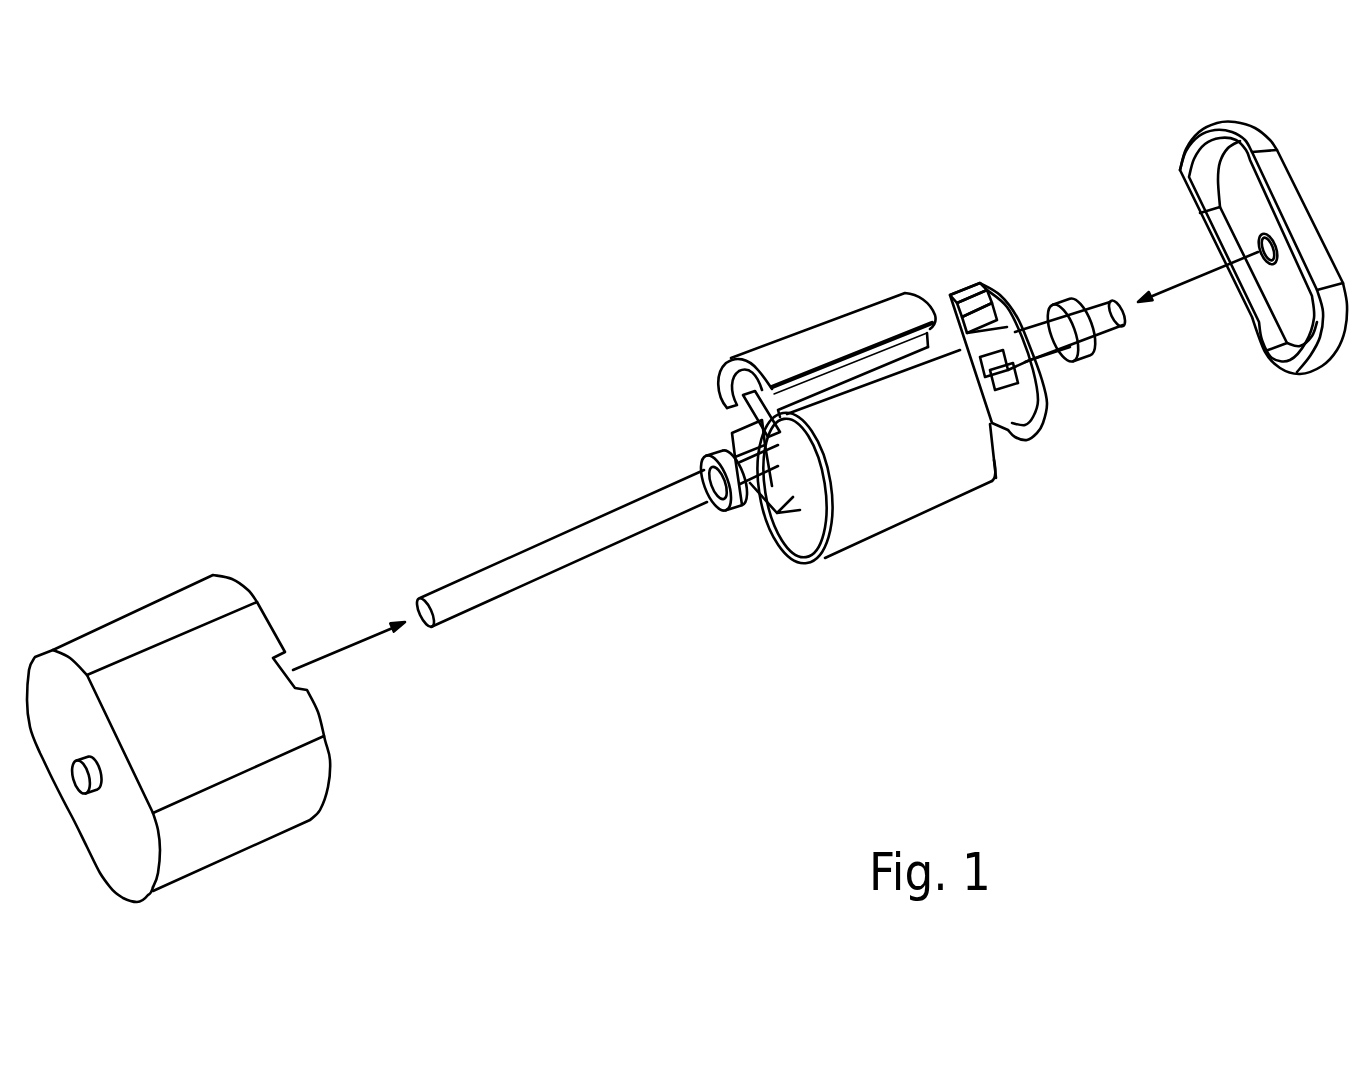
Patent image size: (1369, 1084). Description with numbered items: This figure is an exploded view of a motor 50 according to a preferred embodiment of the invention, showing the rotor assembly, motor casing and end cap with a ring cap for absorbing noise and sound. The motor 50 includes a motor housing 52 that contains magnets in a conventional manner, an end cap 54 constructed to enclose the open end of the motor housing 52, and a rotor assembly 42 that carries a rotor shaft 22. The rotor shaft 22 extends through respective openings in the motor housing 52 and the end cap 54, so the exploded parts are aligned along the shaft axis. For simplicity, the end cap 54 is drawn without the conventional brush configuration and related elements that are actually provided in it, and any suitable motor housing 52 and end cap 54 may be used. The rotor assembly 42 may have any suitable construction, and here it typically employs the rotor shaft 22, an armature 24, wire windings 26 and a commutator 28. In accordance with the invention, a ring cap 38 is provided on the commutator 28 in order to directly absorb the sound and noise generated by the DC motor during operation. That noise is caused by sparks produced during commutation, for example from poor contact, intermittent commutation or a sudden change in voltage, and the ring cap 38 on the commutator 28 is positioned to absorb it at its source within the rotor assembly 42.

The rotor shaft 22 is at (560, 562).
The armature 24 is at (887, 513).
The wire windings 26 is at (740, 417).
The commutator 28 is at (998, 425).
The ring cap 38 is at (988, 296).
The rotor assembly 42 is at (790, 298).
The motor 50 is at (520, 276).
The motor housing 52 is at (250, 830).
The end cap 54 is at (1280, 183).